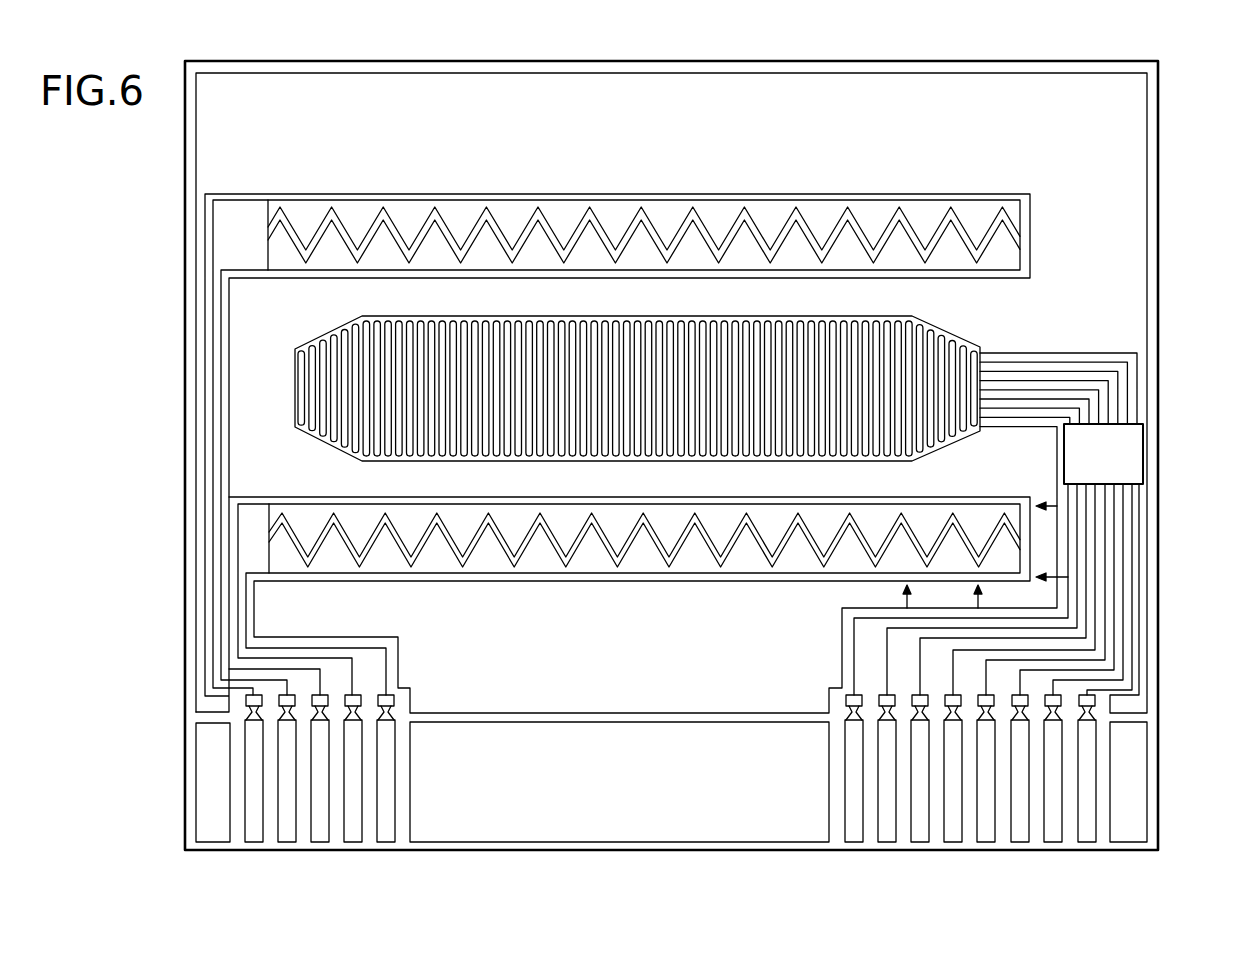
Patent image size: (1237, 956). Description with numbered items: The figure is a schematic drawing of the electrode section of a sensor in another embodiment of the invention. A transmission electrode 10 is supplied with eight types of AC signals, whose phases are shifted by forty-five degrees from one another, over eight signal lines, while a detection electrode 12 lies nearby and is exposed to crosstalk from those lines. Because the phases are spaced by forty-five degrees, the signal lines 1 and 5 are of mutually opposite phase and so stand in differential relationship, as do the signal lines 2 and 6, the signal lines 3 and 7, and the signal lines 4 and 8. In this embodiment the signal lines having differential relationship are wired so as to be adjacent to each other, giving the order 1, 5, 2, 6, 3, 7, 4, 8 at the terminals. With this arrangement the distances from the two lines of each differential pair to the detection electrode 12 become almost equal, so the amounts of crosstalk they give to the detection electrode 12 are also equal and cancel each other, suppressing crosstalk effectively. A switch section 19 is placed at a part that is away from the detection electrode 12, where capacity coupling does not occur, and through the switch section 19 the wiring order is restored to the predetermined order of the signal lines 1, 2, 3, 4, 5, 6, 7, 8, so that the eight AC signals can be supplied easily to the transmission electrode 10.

The transmission electrode 10 is at (733, 325).
The detection electrode 12 is at (387, 244).
The switch section 19 is at (1143, 445).
The signal line 1 is at (956, 683).
The signal line 2 is at (998, 683).
The signal line 3 is at (1041, 683).
The signal line 4 is at (1083, 683).
The signal line 5 is at (977, 683).
The signal line 6 is at (1019, 683).
The signal line 7 is at (1062, 683).
The signal line 8 is at (1105, 683).